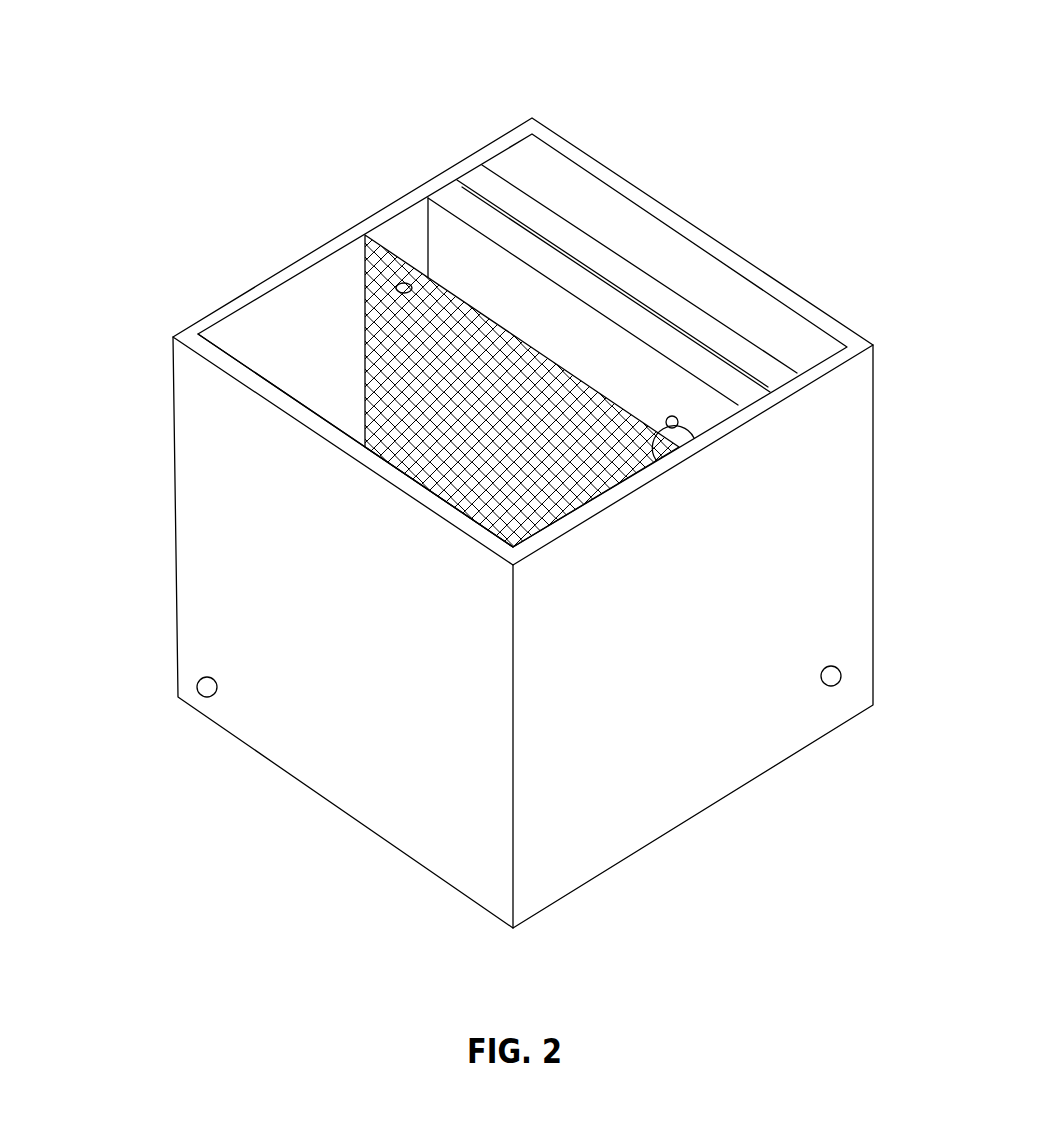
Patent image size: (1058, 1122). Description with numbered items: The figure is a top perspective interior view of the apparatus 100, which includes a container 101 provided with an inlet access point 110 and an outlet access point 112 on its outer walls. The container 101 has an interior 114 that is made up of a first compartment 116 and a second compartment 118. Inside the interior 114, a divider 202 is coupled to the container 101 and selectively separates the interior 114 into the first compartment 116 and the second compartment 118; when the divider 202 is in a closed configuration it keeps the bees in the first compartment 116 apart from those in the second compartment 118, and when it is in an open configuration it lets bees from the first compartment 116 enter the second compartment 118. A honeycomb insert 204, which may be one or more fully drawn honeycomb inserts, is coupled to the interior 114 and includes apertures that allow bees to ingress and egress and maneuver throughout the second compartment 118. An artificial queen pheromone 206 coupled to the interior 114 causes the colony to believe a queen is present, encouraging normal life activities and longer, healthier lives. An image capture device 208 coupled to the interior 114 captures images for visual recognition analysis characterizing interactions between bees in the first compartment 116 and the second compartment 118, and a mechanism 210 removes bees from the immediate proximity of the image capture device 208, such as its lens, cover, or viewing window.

The apparatus 100 is at (851, 116).
The container 101 is at (168, 497).
The inlet access point 110 is at (207, 697).
The outlet access point 112 is at (841, 679).
The interior 114 is at (277, 325).
The first compartment 116 is at (292, 360).
The second compartment 118 is at (551, 184).
The divider 202 is at (383, 259).
The honeycomb insert 204 is at (743, 303).
The artificial queen pheromone 206 is at (396, 290).
The image capture device 208 is at (674, 441).
The mechanism 210 is at (666, 418).